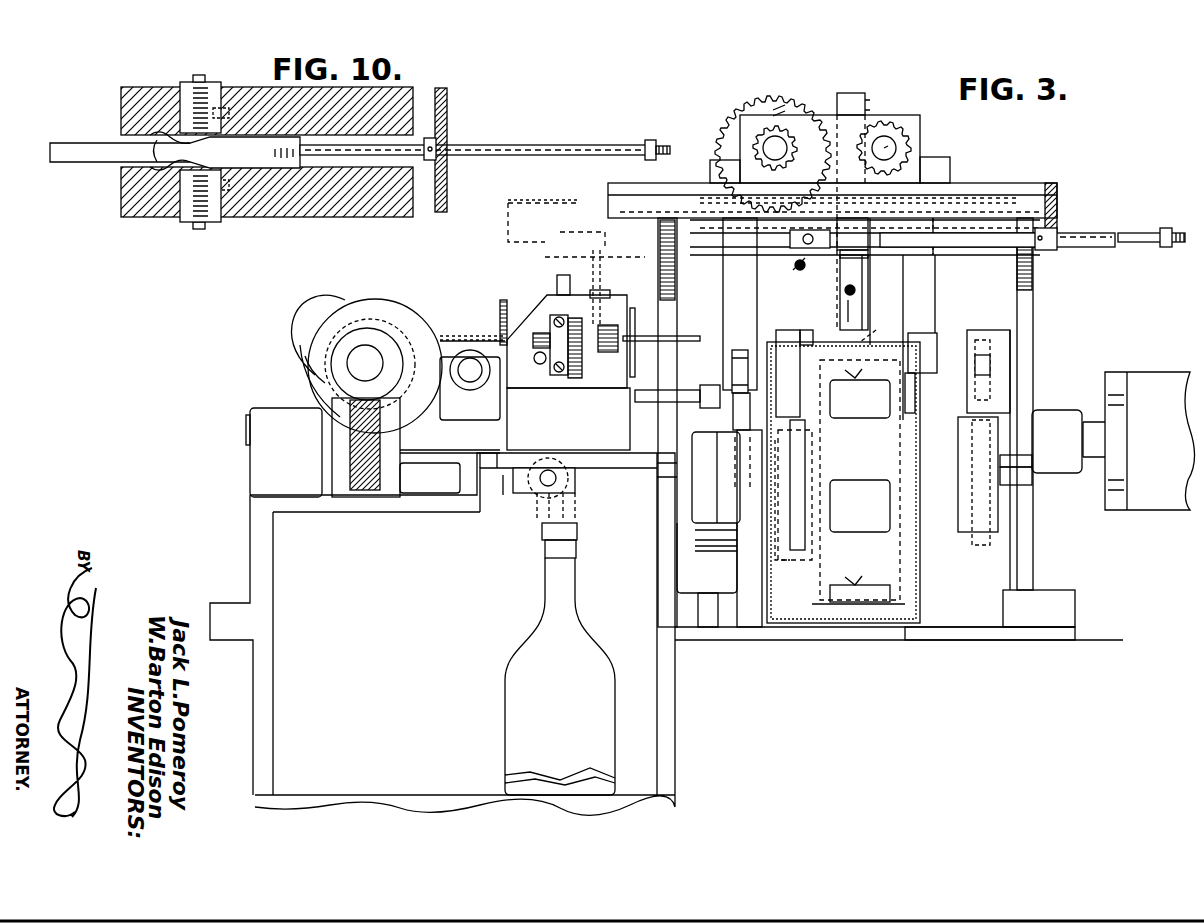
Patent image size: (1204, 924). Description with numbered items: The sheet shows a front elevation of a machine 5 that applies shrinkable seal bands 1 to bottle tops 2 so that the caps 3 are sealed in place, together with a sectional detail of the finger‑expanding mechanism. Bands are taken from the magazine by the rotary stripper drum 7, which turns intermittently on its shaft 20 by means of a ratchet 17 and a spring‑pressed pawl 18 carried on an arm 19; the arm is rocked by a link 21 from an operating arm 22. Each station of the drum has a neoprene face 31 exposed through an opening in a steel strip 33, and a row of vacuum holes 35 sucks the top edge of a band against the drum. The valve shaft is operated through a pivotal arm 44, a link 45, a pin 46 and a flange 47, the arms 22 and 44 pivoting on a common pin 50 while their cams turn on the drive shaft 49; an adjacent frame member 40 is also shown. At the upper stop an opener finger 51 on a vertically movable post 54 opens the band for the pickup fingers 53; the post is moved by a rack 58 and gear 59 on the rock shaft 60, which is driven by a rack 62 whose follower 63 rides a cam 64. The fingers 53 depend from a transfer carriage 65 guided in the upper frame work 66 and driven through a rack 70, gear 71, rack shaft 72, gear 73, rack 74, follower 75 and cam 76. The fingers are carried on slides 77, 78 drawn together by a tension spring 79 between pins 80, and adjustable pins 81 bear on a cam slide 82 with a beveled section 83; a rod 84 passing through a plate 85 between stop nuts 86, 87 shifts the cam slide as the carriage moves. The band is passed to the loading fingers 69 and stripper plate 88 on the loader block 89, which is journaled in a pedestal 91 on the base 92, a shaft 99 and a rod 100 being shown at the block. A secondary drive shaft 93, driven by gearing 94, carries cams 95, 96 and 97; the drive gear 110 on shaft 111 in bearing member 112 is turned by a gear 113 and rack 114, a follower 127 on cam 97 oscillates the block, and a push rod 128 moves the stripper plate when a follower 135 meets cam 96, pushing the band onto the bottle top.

In FIG. 3, the seal band 1 is at (878, 330).
In FIG. 3, the bottle top 2 is at (540, 568).
In FIG. 3, the cap 3 is at (540, 537).
In FIG. 3, the housing 5 is at (772, 628).
In FIG. 3, the stripper drum 7 is at (815, 608).
In FIG. 3, the ratchet 17 is at (797, 552).
In FIG. 3, the pawl 18 is at (845, 415).
In FIG. 3, the arm 19 is at (778, 455).
In FIG. 3, the shaft 20 is at (1012, 493).
In FIG. 3, the link 21 is at (782, 330).
In FIG. 3, the operating arm 22 is at (808, 330).
In FIG. 3, the face 31 is at (862, 604).
In FIG. 3, the stainless steel strip 33 is at (900, 605).
In FIG. 3, the vacuum holes 35 is at (872, 578).
In FIG. 3, the shaft 40 is at (1015, 470).
In FIG. 3, the pivotal arm 44 is at (1000, 330).
In FIG. 3, the link 45 is at (975, 330).
In FIG. 3, the pin 46 is at (990, 385).
In FIG. 3, the flange 47 is at (998, 512).
In FIG. 3, the drive shaft 49 is at (1100, 372).
In FIG. 3, the pin 50 is at (718, 548).
In FIG. 3, the opener finger 51 is at (868, 316).
In FIG. 10, the pickup and transfer fingers 53 is at (228, 192).
In FIG. 3, the pickup and transfer fingers 53 is at (838, 255).
In FIG. 3, the post 54 is at (836, 102).
In FIG. 3, the vertical rack 58 is at (868, 100).
In FIG. 3, the gear 59 is at (893, 130).
In FIG. 3, the rock shaft 60 is at (890, 148).
In FIG. 3, the vertical rack 62 is at (950, 158).
In FIG. 3, the cam follower 63 is at (937, 340).
In FIG. 3, the cam 64 is at (925, 395).
In FIG. 10, the transfer carriage 65 is at (290, 218).
In FIG. 3, the upper frame work 66 is at (1012, 185).
In FIG. 3, the loading fingers 69 is at (692, 334).
In FIG. 3, the rack 70 is at (828, 198).
In FIG. 3, the gear 71 is at (752, 104).
In FIG. 3, the rack shaft 72 is at (778, 146).
In FIG. 3, the gear 73 is at (780, 110).
In FIG. 3, the vertical rack 74 is at (740, 275).
In FIG. 3, the cam follower 75 is at (732, 360).
In FIG. 3, the cam 76 is at (733, 405).
In FIG. 10, the slide 77 is at (180, 220).
In FIG. 3, the slide 77 is at (803, 230).
In FIG. 10, the slide 78 is at (180, 84).
In FIG. 3, the tension spring 79 is at (800, 278).
In FIG. 3, the pins 80 is at (795, 265).
In FIG. 10, the adjustable pin 81 is at (197, 245).
In FIG. 10, the operating cam 82 is at (100, 163).
In FIG. 10, the beveled cam section 83 is at (150, 160).
In FIG. 10, the rod 84 is at (508, 144).
In FIG. 3, the rod 84 is at (1085, 232).
In FIG. 10, the plate 85 is at (448, 113).
In FIG. 3, the plate 85 is at (1058, 205).
In FIG. 10, the stop nut 86 is at (437, 160).
In FIG. 3, the stop nut 86 is at (1040, 252).
In FIG. 10, the stop nut 87 is at (650, 138).
In FIG. 3, the stop nut 87 is at (1165, 248).
In FIG. 3, the stripper plate 88 is at (637, 310).
In FIG. 3, the loader block 89 is at (545, 298).
In FIG. 3, the pedestal 91 is at (510, 433).
In FIG. 3, the base 92 is at (497, 470).
In FIG. 3, the secondary drive shaft 93 is at (432, 455).
In FIG. 3, the gearing 94 is at (345, 385).
In FIG. 3, the cam 95 is at (308, 358).
In FIG. 3, the cam 96 is at (330, 305).
In FIG. 3, the cam 97 is at (415, 310).
In FIG. 3, the shaft 99 is at (605, 392).
In FIG. 3, the rod 100 is at (608, 282).
In FIG. 3, the drive gear 110 is at (583, 352).
In FIG. 3, the shaft 111 is at (553, 325).
In FIG. 3, the bearing member 112 is at (553, 372).
In FIG. 3, the gear 113 is at (534, 343).
In FIG. 3, the rack 114 is at (537, 363).
In FIG. 3, the cam follower 127 is at (485, 383).
In FIG. 3, the push rod 128 is at (468, 336).
In FIG. 3, the cam follower 135 is at (576, 505).